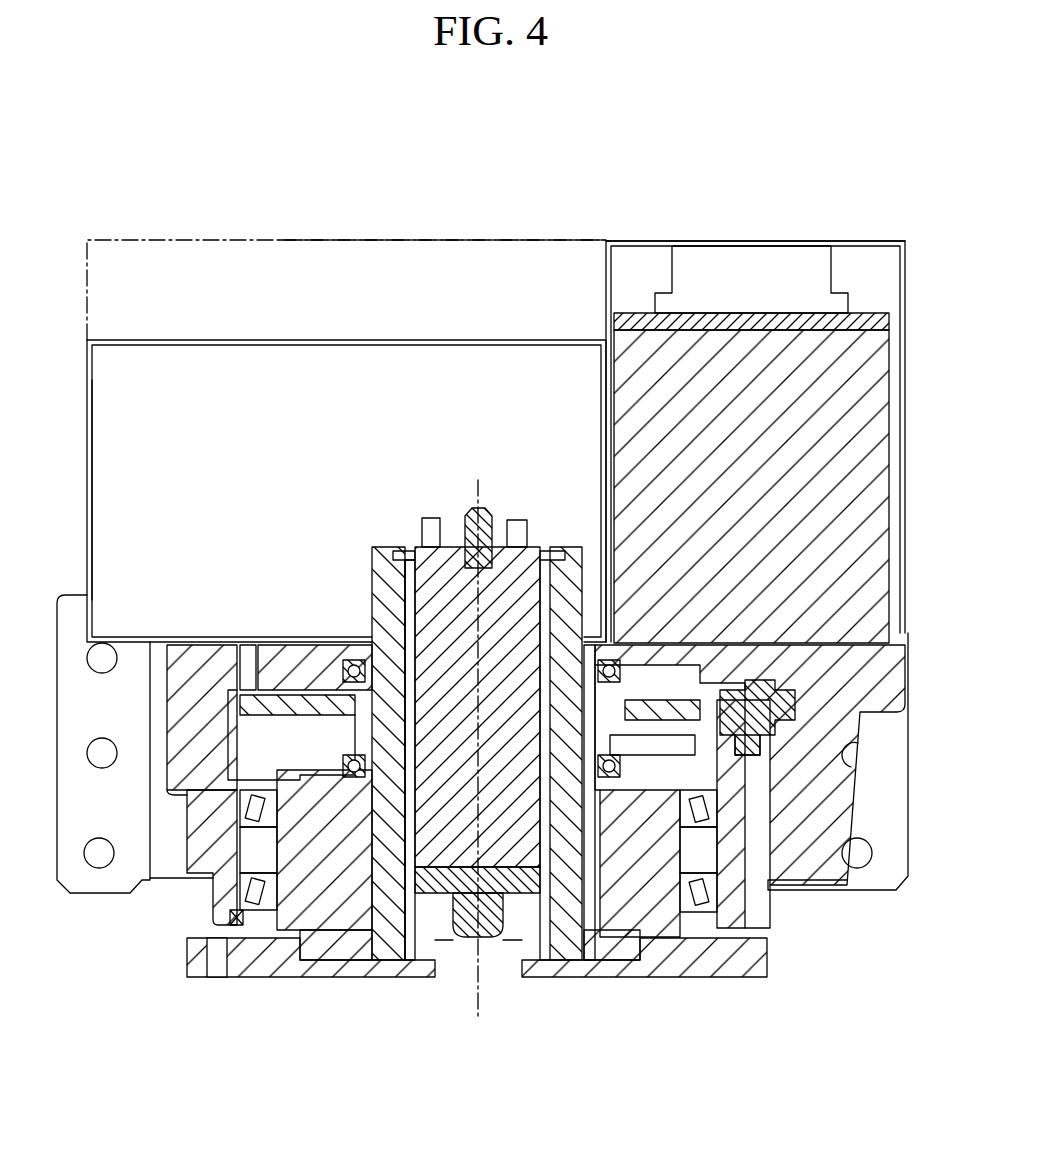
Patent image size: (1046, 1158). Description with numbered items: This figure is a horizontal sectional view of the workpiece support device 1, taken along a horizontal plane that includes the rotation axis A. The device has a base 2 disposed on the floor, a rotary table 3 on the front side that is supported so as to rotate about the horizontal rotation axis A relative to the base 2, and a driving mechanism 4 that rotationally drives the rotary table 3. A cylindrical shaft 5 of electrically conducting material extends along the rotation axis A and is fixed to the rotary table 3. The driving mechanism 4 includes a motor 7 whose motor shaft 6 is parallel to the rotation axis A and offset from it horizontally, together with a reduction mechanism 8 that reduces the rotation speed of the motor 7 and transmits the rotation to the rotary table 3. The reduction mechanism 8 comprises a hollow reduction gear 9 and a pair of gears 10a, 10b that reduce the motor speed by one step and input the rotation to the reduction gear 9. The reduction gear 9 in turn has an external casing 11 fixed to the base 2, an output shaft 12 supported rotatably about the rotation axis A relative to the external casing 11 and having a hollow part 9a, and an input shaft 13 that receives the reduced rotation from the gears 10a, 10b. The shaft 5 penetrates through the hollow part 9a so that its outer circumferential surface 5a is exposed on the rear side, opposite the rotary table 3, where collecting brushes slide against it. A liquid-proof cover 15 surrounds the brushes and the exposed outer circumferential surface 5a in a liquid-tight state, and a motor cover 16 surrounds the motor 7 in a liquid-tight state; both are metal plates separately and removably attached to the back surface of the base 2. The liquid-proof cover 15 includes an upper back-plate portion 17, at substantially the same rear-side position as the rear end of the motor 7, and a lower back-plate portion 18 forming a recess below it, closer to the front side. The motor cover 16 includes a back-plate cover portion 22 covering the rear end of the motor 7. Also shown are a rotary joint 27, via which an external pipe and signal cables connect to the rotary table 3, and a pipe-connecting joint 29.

The workpiece support device 1 is at (103, 183).
The base 2 is at (57, 845).
The rotary table 3 is at (425, 980).
The driving mechanism 4 is at (876, 205).
The shaft 5 is at (383, 876).
The outer circumferential surface 5a is at (372, 570).
The motor shaft 6 is at (850, 745).
The motor 7 is at (887, 432).
The reduction mechanism 8 is at (712, 742).
The reduction gear 9 is at (750, 920).
The hollow part 9a is at (570, 960).
The gear 10a is at (748, 735).
The gear 10b is at (790, 700).
The external casing 11 is at (748, 895).
The output shaft 12 is at (645, 960).
The input shaft 13 is at (628, 718).
The liquid-proof cover 15 is at (87, 430).
The motor cover 16 is at (676, 241).
The upper back-plate portion 17 is at (284, 240).
The lower back-plate portion 18 is at (165, 340).
The back-plate cover portion 22 is at (800, 241).
The rotary joint 27 is at (514, 585).
The pipe-connecting joint 29 is at (475, 508).
The rotation axis A is at (478, 1020).